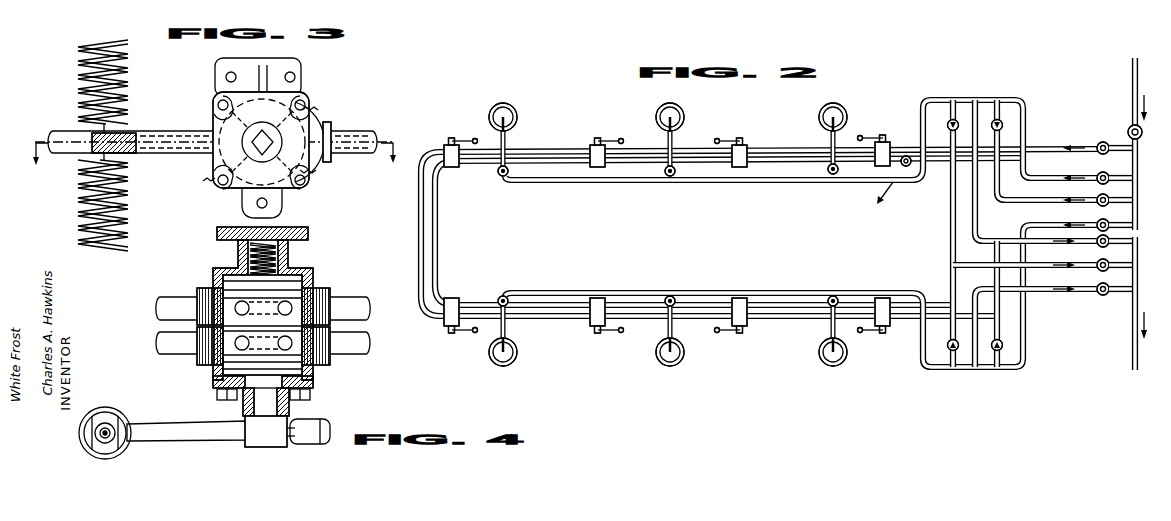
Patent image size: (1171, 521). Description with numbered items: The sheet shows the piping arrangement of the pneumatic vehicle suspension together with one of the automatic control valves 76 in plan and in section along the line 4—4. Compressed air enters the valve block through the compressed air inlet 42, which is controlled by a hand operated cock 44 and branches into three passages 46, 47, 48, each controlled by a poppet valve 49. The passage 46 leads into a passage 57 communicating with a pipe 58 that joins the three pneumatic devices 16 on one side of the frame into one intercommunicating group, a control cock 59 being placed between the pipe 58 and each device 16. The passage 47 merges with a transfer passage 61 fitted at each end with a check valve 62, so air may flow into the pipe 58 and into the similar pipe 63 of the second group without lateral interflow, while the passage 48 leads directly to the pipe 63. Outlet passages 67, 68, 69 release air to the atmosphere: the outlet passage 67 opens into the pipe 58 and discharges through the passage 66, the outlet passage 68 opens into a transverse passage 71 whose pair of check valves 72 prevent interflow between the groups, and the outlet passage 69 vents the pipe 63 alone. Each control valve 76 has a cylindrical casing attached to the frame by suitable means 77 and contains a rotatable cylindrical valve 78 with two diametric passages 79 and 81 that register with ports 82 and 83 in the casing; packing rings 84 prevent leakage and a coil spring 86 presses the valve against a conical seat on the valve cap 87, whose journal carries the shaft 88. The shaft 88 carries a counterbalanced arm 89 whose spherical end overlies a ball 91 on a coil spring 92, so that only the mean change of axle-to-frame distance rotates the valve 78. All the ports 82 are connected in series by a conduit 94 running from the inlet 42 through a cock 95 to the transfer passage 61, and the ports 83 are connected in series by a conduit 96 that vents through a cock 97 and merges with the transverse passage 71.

In FIG. 3, the section line 4— 4 is at (213, 144).
In FIG. 2, the pneumatic device 16 is at (845, 110).
In FIG. 2, the compressed air inlet 42 is at (1132, 100).
In FIG. 2, the hand operated cock 44 is at (1128, 133).
In FIG. 2, the passage 46 is at (1114, 168).
In FIG. 2, the passage 47 is at (1114, 192).
In FIG. 2, the passage 48 is at (1114, 216).
In FIG. 2, the valve 49 is at (1097, 222).
In FIG. 2, the passage 57 is at (1049, 173).
In FIG. 2, the pipe 58 is at (762, 183).
In FIG. 2, the control cock 59 is at (665, 176).
In FIG. 2, the transfer passage 61 is at (998, 187).
In FIG. 2, the check valve 62 is at (1003, 125).
In FIG. 2, the pipe 63 is at (764, 292).
In FIG. 2, the passage 66 is at (1132, 313).
In FIG. 2, the outlet passage 67 is at (1107, 245).
In FIG. 2, the outlet passage 68 is at (1107, 268).
In FIG. 2, the outlet passage 69 is at (1107, 292).
In FIG. 2, the transverse passage 71 is at (950, 238).
In FIG. 2, the check valve 72 is at (947, 125).
In FIG. 3, the control valve 76 is at (284, 98).
In FIG. 4, the control valve 76 is at (298, 272).
In FIG. 2, the control valve 76 is at (592, 150).
In FIG. 3, the attaching means 77 is at (300, 66).
In FIG. 4, the attaching means 77 is at (217, 234).
In FIG. 3, the cylindrical valve 78 is at (318, 114).
In FIG. 4, the cylindrical valve 78 is at (290, 290).
In FIG. 3, the diametric passage 79 is at (214, 182).
In FIG. 4, the diametric passage 79 is at (238, 306).
In FIG. 3, the diametric passage 81 is at (306, 184).
In FIG. 4, the diametric passage 81 is at (288, 346).
In FIG. 4, the port 82 is at (205, 300).
In FIG. 4, the port 83 is at (215, 365).
In FIG. 4, the packing ring 84 is at (285, 300).
In FIG. 4, the coil spring 86 is at (245, 252).
In FIG. 4, the valve cap 87 is at (290, 410).
In FIG. 4, the shaft 88 is at (258, 410).
In FIG. 3, the counterbalanced arm 89 is at (178, 136).
In FIG. 4, the counterbalanced arm 89 is at (228, 431).
In FIG. 3, the ball 91 is at (110, 138).
In FIG. 4, the ball 91 is at (112, 426).
In FIG. 3, the coil spring 92 is at (126, 85).
In FIG. 4, the coil spring 92 is at (113, 412).
In FIG. 3, the conduit 94 is at (354, 142).
In FIG. 4, the conduit 94 is at (263, 308).
In FIG. 2, the conduit 94 is at (795, 150).
In FIG. 2, the cock 95 is at (1099, 143).
In FIG. 4, the conduit 96 is at (263, 343).
In FIG. 2, the conduit 96 is at (806, 159).
In FIG. 2, the cock 97 is at (906, 156).